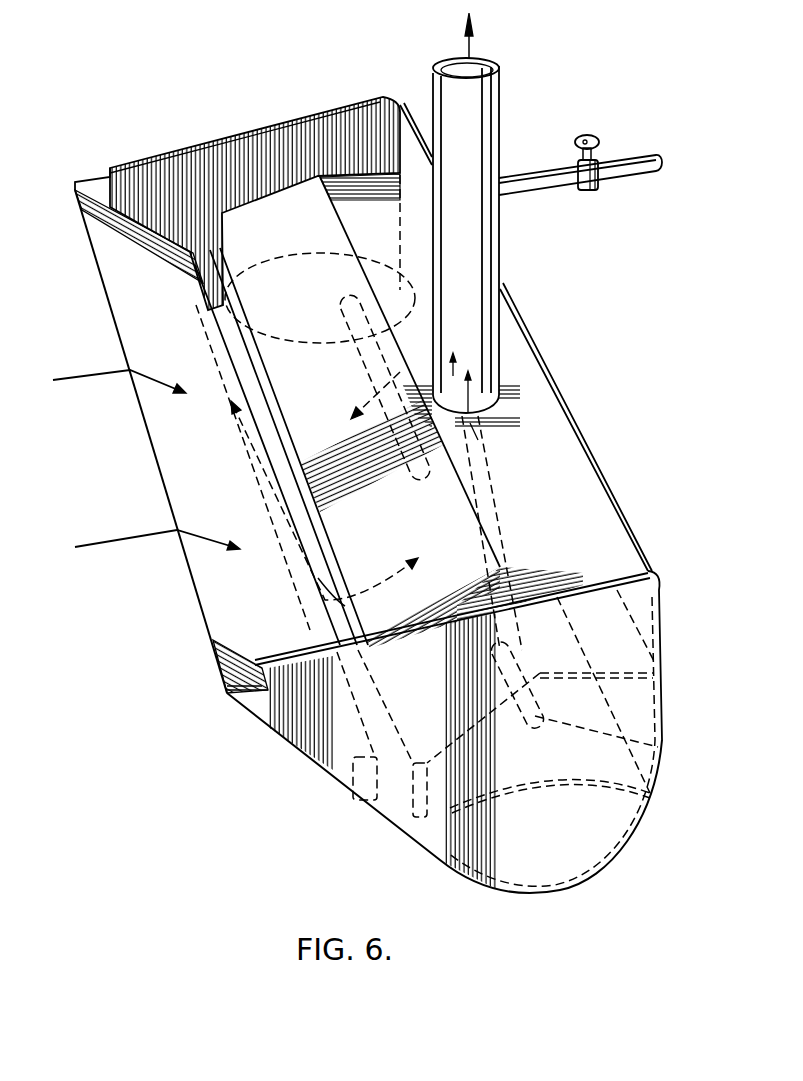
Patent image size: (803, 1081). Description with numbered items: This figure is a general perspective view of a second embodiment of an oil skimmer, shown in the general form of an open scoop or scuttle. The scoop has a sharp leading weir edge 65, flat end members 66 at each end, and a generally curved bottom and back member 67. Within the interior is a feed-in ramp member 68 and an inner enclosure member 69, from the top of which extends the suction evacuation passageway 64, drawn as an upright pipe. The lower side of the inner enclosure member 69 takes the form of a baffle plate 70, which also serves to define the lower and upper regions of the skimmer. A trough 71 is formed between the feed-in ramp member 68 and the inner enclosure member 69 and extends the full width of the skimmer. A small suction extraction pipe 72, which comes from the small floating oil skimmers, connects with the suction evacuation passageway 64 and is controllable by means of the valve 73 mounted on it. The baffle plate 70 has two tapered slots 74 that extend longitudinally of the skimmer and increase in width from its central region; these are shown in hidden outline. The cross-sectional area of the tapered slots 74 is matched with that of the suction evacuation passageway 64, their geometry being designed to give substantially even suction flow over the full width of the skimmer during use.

The suction evacuation passageway 64 is at (473, 272).
The sharp leading weir edge 65 is at (157, 463).
The flat end members 66 is at (203, 142).
The curved bottom and back member 67 is at (570, 418).
The feed-in ramp member 68 is at (240, 593).
The inner enclosure member 69 is at (555, 515).
The baffle plate 70 is at (630, 837).
The trough 71 is at (236, 652).
The small suction extraction pipe 72 is at (520, 183).
The valve 73 is at (598, 150).
The tapered slots 74 is at (365, 372).